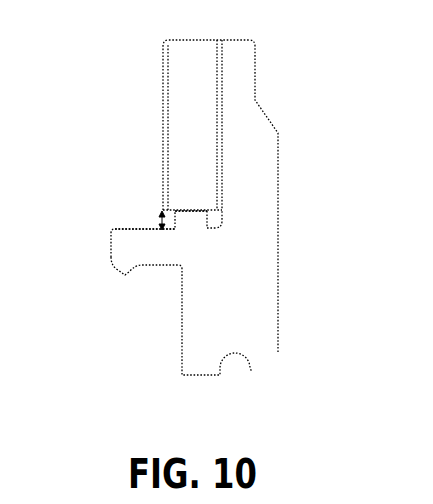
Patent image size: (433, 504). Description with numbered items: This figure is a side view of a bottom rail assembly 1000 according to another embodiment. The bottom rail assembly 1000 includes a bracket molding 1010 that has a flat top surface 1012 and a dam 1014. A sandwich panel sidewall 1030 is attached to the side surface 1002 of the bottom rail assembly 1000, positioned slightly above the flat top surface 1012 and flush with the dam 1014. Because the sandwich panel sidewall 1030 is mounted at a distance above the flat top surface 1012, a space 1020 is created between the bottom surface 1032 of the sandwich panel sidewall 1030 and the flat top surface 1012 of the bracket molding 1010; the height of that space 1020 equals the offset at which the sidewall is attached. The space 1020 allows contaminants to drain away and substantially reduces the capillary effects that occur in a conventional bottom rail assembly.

The bottom rail assembly 1000 is at (278, 133).
The side surface 1002 is at (221, 105).
The bracket molding 1010 is at (127, 275).
The flat top surface 1012 is at (137, 228).
The dam 1014 is at (194, 212).
The space 1020 is at (159, 225).
The sandwich panel sidewall 1030 is at (163, 125).
The bottom surface 1032 is at (215, 214).